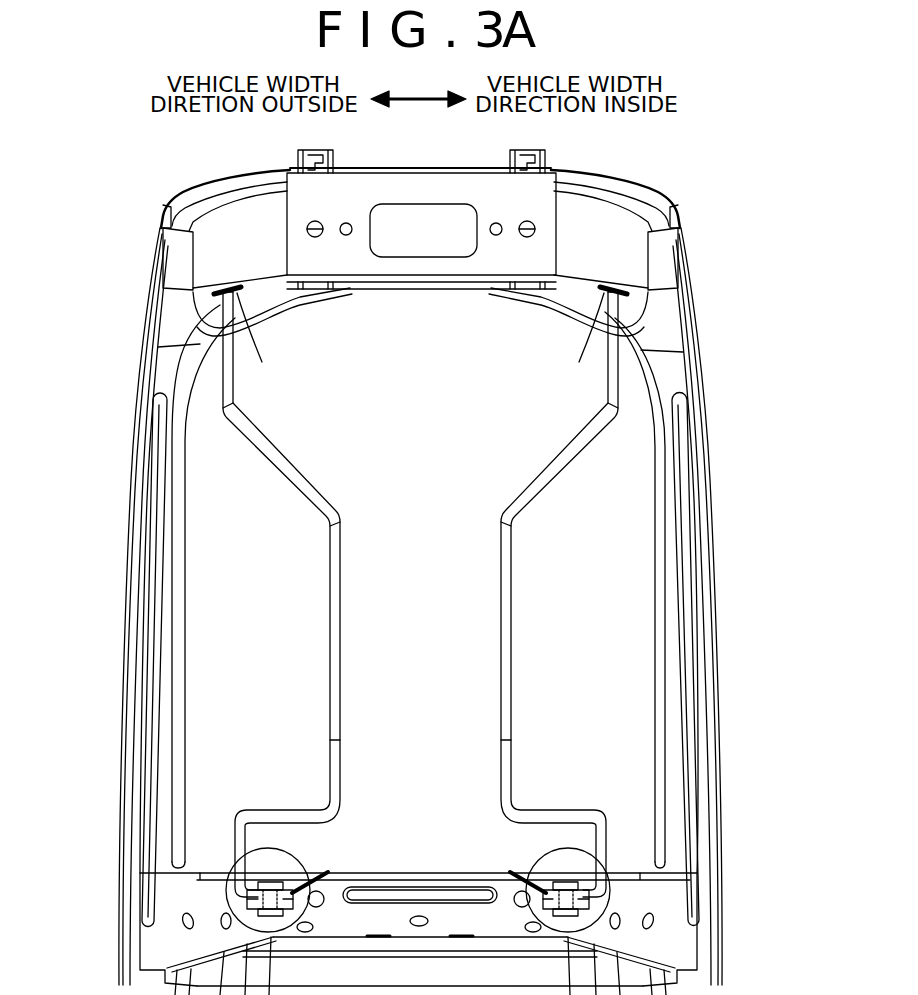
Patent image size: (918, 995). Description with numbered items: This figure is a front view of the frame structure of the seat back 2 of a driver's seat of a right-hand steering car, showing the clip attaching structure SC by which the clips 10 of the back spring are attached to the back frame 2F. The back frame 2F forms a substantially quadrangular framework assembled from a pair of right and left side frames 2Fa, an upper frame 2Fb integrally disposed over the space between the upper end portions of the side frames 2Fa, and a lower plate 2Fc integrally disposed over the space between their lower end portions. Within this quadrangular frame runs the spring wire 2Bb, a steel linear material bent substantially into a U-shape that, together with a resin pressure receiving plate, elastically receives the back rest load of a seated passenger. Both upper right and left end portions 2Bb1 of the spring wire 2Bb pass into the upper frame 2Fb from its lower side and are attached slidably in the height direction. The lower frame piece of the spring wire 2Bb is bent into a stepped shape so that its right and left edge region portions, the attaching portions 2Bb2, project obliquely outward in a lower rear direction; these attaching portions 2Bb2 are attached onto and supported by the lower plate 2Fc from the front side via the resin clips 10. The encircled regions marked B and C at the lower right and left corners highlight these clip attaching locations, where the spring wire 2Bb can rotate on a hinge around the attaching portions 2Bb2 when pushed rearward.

The seat back 2 is at (684, 176).
The back frame 2F is at (698, 320).
The side frames 2Fa is at (132, 480).
The upper frame 2Fb is at (585, 214).
The lower plate 2Fc is at (420, 885).
The spring wire 2Bb is at (307, 490).
The upper right and left end portions 2Bb1 is at (231, 330).
The attaching portions 2Bb2 is at (292, 877).
The clip 10 is at (269, 881).
The clip attaching structure SC is at (284, 862).
The detail portion B is at (261, 888).
The detail portion C is at (576, 888).